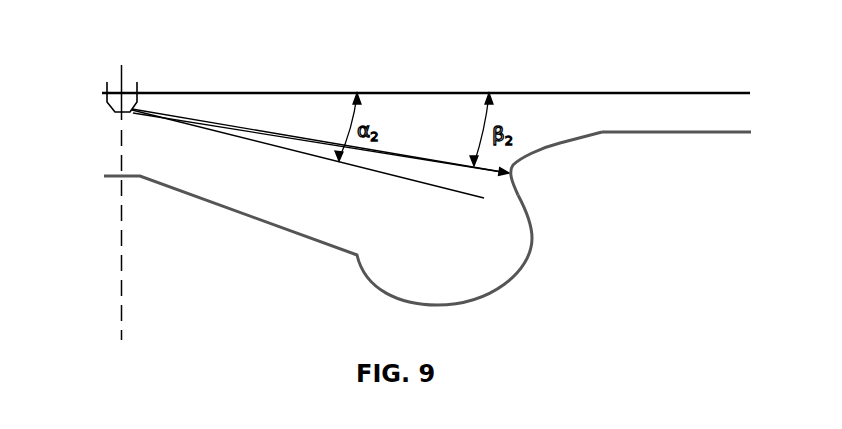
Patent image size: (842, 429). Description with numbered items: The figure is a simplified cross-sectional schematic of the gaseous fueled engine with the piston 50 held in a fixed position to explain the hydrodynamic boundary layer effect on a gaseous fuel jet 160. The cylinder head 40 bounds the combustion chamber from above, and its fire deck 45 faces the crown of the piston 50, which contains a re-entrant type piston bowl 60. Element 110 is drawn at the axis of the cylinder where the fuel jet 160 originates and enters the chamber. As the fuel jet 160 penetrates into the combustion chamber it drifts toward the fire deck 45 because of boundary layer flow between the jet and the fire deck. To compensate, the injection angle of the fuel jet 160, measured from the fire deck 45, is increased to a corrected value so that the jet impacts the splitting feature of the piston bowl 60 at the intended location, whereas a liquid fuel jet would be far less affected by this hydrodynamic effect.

The cylinder head 40 is at (297, 93).
The fire deck 45 is at (542, 95).
The piston 50 is at (697, 133).
The re-entrant type piston bowl 60 is at (282, 222).
The fuel injector nozzle 110 is at (106, 89).
The fuel jet 160 is at (406, 156).